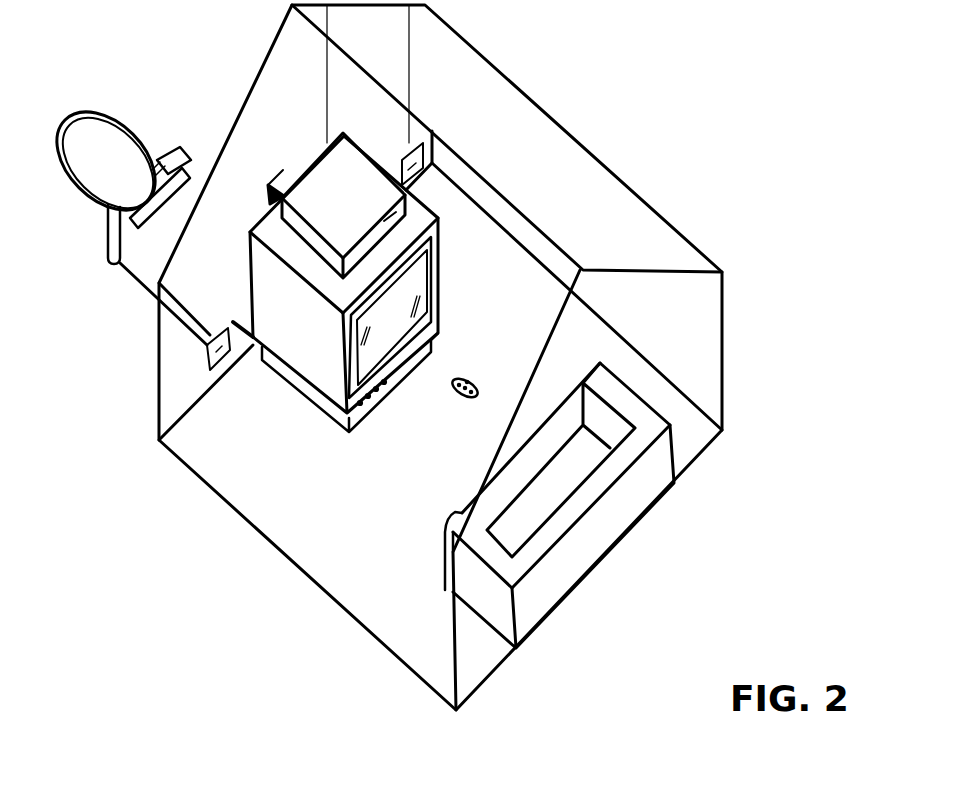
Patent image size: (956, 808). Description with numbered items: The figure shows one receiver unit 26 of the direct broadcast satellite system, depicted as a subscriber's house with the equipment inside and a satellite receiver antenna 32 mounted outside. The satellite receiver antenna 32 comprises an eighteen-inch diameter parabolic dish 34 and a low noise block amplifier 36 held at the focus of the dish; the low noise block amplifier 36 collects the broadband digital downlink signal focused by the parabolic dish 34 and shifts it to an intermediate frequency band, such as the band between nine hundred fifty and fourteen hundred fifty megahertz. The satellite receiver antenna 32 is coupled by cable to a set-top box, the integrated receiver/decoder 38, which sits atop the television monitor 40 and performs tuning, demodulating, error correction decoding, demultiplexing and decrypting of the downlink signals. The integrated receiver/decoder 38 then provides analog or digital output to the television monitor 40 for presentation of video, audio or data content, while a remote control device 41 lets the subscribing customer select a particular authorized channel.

The receiver unit 26 is at (728, 272).
The satellite receiver antenna 32 is at (122, 199).
The parabolic dish 34 is at (92, 173).
The low noise block amplifier 36 is at (177, 150).
The integrated receiver/decoder 38 is at (313, 213).
The television monitor 40 is at (268, 327).
The remote control device 41 is at (453, 393).